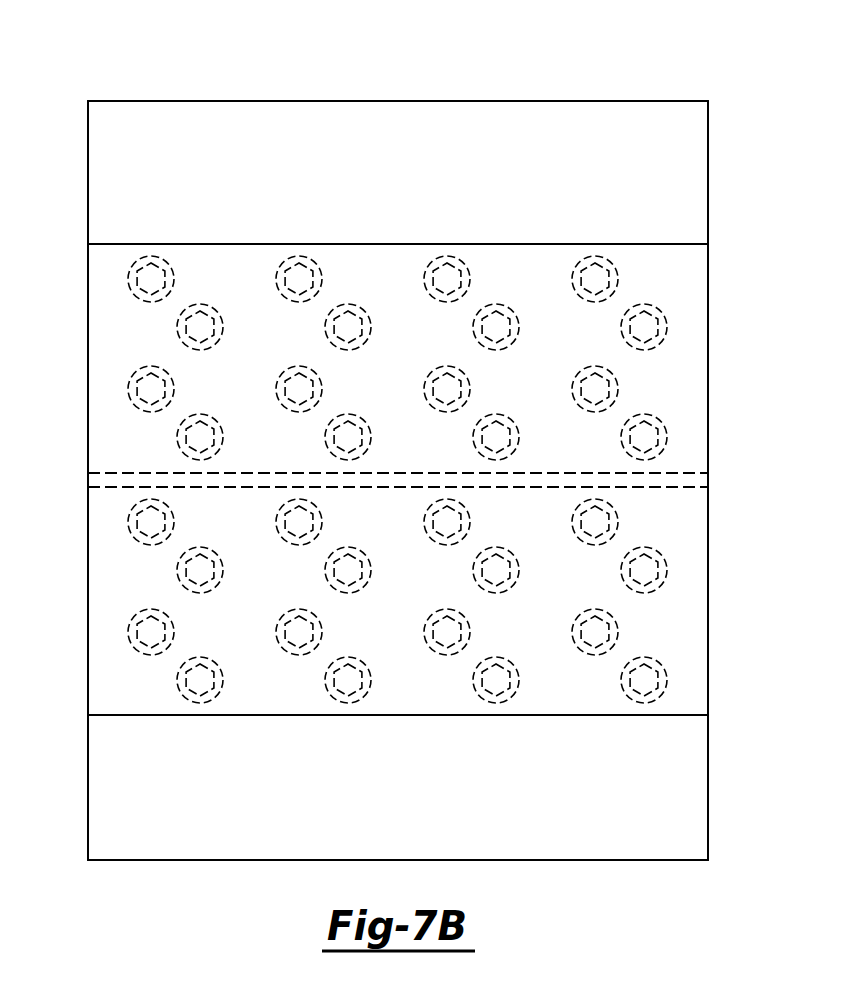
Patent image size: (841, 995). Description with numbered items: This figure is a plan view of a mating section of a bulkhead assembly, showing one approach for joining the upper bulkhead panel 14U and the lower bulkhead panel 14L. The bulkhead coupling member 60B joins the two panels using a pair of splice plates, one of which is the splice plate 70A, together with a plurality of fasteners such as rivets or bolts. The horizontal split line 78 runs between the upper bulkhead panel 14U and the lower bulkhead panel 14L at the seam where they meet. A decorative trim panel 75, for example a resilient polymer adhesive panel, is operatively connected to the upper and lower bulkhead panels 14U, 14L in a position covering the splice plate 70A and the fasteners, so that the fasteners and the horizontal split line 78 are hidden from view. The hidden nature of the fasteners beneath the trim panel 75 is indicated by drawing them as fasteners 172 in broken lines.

The bulkhead coupling member 60B is at (760, 113).
The upper bulkhead panel 14U is at (410, 185).
The lower bulkhead panel 14L is at (410, 800).
The splice plate 70A is at (228, 244).
The decorative trim panel 75 is at (678, 278).
The horizontal split line 78 is at (728, 484).
The fasteners 172 is at (600, 252).